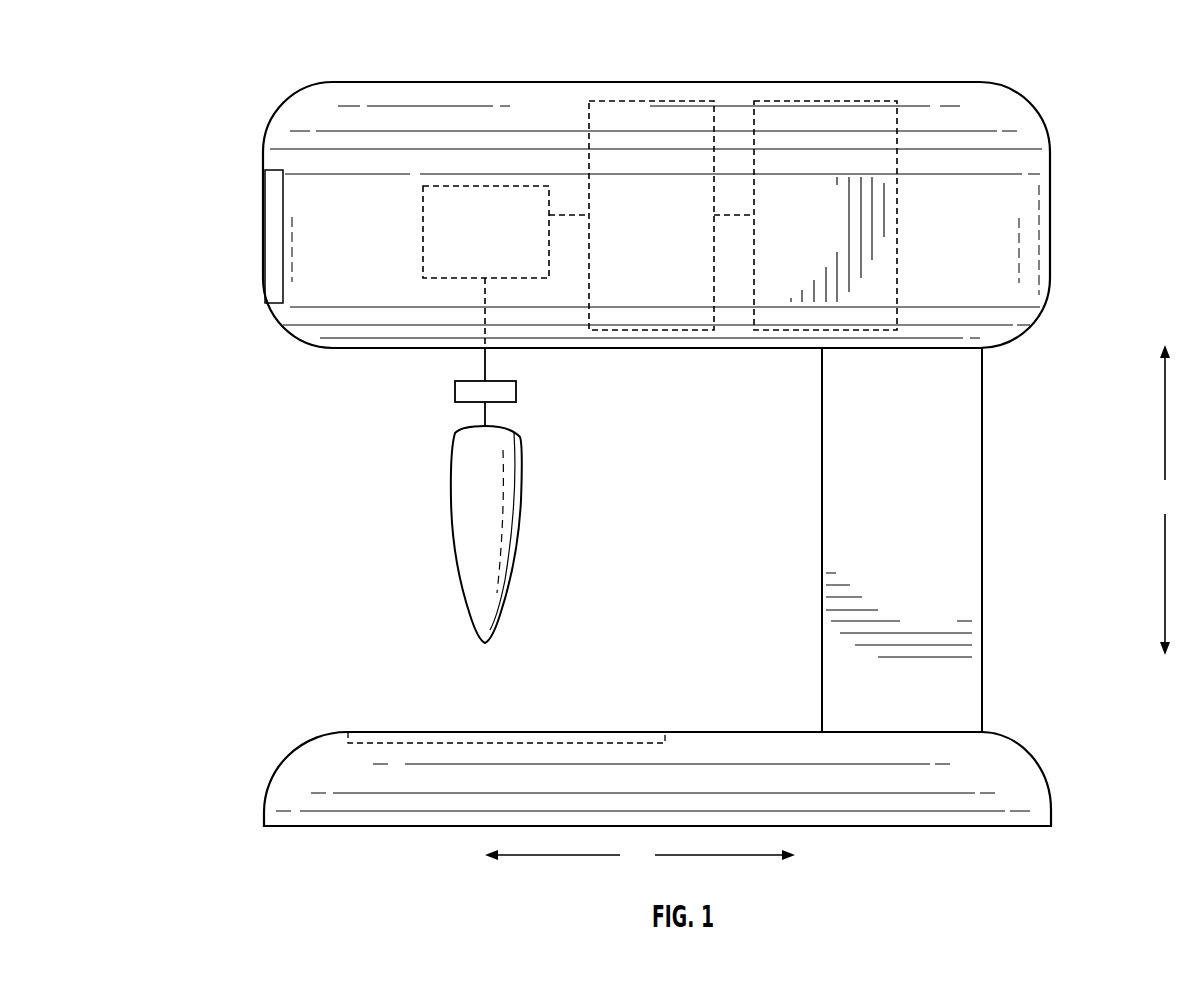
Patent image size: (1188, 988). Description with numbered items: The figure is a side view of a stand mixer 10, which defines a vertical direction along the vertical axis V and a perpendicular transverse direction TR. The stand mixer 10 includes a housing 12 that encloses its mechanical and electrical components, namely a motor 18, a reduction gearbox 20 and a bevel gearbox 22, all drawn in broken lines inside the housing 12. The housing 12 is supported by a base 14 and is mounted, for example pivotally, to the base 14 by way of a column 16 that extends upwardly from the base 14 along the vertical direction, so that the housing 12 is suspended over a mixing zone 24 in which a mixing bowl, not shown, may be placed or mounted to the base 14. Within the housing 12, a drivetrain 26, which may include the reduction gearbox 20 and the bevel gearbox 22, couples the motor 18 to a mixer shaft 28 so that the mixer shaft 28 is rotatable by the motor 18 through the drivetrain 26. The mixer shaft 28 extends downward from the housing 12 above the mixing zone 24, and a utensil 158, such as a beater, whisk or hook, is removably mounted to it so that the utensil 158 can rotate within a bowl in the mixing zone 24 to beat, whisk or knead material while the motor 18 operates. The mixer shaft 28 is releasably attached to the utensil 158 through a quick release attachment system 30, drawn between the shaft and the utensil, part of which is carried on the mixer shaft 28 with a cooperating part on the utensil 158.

The stand mixer 10 is at (1042, 78).
The housing 12 is at (252, 372).
The base 14 is at (1030, 757).
The column 16 is at (982, 556).
The motor 18 is at (858, 101).
The reduction gearbox 20 is at (652, 101).
The bevel gearbox 22 is at (486, 186).
The mixing zone 24 is at (340, 605).
The drivetrain 26 is at (548, 113).
The mixer shaft 28 is at (486, 360).
The quick release attachment system 30 is at (455, 388).
The utensil 158 is at (452, 475).